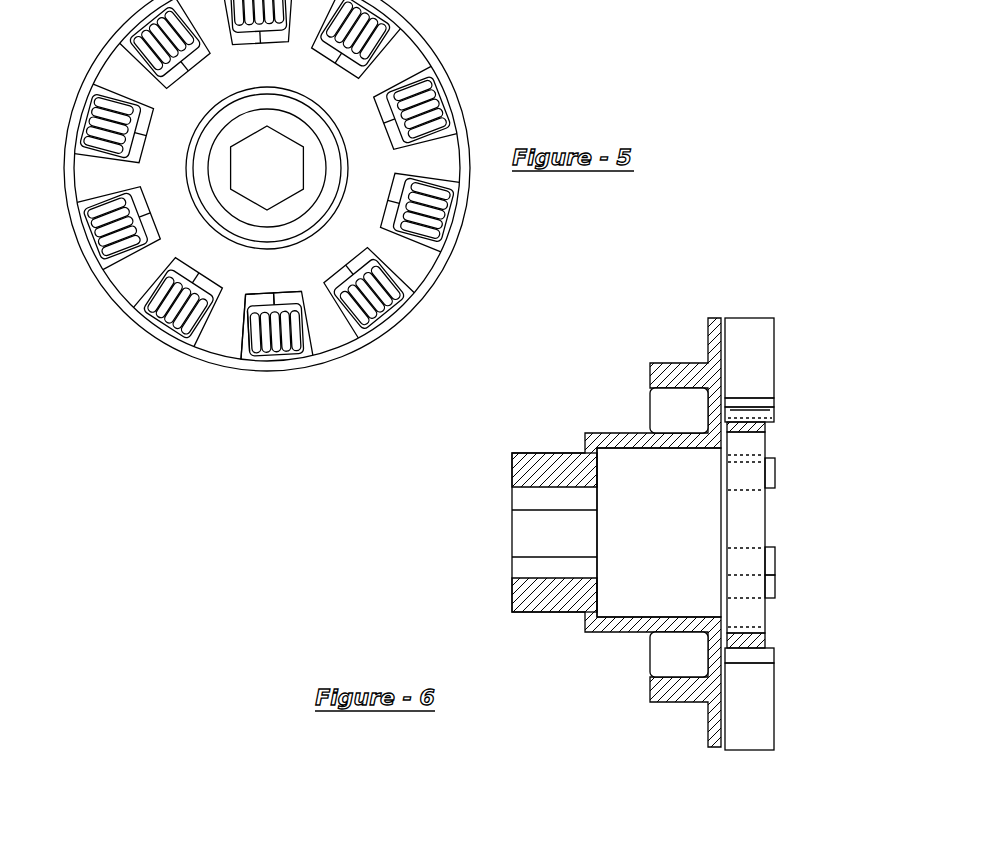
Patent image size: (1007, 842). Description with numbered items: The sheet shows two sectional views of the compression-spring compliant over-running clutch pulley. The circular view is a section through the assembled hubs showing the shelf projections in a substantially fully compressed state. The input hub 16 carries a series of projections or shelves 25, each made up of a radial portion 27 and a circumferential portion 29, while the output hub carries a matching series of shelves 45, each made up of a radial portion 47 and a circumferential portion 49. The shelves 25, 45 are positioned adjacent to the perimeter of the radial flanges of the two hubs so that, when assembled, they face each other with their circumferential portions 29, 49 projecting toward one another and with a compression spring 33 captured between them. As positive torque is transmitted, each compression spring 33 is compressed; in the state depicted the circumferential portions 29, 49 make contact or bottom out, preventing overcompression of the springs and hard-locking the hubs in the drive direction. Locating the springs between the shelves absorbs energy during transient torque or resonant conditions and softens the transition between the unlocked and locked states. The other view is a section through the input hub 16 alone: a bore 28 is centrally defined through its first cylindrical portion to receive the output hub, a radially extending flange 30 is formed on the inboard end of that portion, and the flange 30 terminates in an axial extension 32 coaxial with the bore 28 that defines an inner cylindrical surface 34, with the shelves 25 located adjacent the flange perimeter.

In FIG. 6, the input hub 16 is at (547, 612).
In FIG. 5, the shelves 25 is at (242, 353).
In FIG. 6, the shelves 25 is at (777, 368).
In FIG. 5, the radial portion 27 is at (247, 323).
In FIG. 6, the radial portion 27 is at (752, 340).
In FIG. 6, the bore 28 is at (632, 452).
In FIG. 5, the circumferential portion 29 is at (256, 296).
In FIG. 6, the circumferential portion 29 is at (764, 410).
In FIG. 6, the flange 30 is at (725, 407).
In FIG. 6, the axial extension 32 is at (672, 378).
In FIG. 5, the compression spring 33 is at (272, 355).
In FIG. 6, the inner cylindrical surface 34 is at (687, 680).
In FIG. 5, the shelves 45 is at (308, 352).
In FIG. 5, the radial portion 47 is at (356, 320).
In FIG. 5, the circumferential portion 49 is at (284, 293).